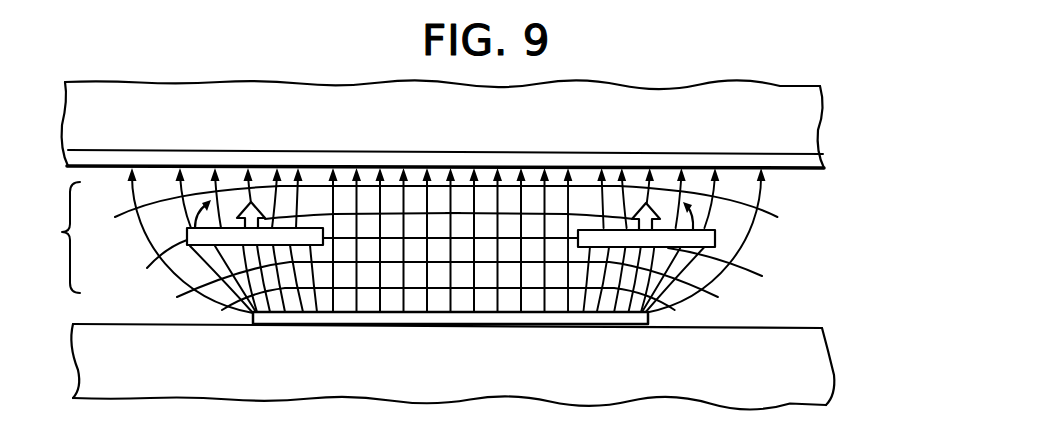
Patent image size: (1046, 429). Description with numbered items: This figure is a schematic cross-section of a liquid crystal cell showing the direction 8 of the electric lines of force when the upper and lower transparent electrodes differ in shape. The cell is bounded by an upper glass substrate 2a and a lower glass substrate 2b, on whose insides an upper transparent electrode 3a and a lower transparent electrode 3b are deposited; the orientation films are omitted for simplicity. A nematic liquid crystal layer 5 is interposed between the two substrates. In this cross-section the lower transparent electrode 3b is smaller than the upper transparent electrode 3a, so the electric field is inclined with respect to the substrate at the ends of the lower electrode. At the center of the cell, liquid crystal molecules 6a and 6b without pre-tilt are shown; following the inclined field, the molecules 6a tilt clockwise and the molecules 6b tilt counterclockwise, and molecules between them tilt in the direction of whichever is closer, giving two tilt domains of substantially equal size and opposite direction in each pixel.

The upper glass substrate 2a is at (824, 125).
The lower glass substrate 2b is at (823, 356).
The upper transparent electrode 3a is at (815, 172).
The lower transparent electrode 3b is at (600, 325).
The nematic liquid crystal layer 5 is at (408, 240).
The liquid crystal molecule 6a is at (233, 247).
The liquid crystal molecule 6b is at (715, 240).
The direction of electric field 8 is at (291, 328).